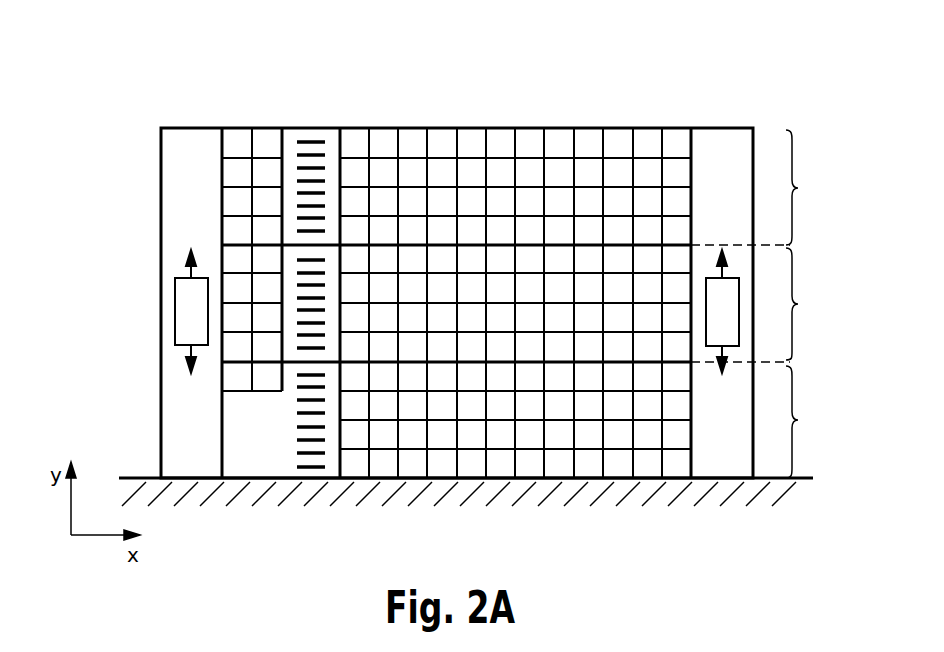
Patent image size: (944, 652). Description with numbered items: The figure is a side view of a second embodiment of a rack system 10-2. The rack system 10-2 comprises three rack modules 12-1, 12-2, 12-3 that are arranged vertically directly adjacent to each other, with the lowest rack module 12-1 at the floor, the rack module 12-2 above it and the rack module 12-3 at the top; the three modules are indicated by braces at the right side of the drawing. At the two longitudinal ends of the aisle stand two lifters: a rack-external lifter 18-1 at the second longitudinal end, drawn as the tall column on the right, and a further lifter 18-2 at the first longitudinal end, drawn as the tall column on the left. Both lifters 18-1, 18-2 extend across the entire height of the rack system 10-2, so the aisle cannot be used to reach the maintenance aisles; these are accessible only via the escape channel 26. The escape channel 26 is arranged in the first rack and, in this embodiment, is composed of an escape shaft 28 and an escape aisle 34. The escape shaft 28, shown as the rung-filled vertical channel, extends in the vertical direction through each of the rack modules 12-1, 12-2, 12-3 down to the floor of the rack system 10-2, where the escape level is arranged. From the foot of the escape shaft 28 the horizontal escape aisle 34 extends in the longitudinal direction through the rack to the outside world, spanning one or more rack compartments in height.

The rack system 10-2 is at (138, 113).
The rack module 12-1 is at (821, 422).
The rack module 12-2 is at (773, 305).
The rack module 12-3 is at (773, 187).
The rack-external lifter 18-1 is at (716, 128).
The further lifter 18-2 is at (161, 195).
The escape channel 26 is at (295, 127).
The escape shaft 28 is at (325, 142).
The escape aisle 34 is at (247, 450).